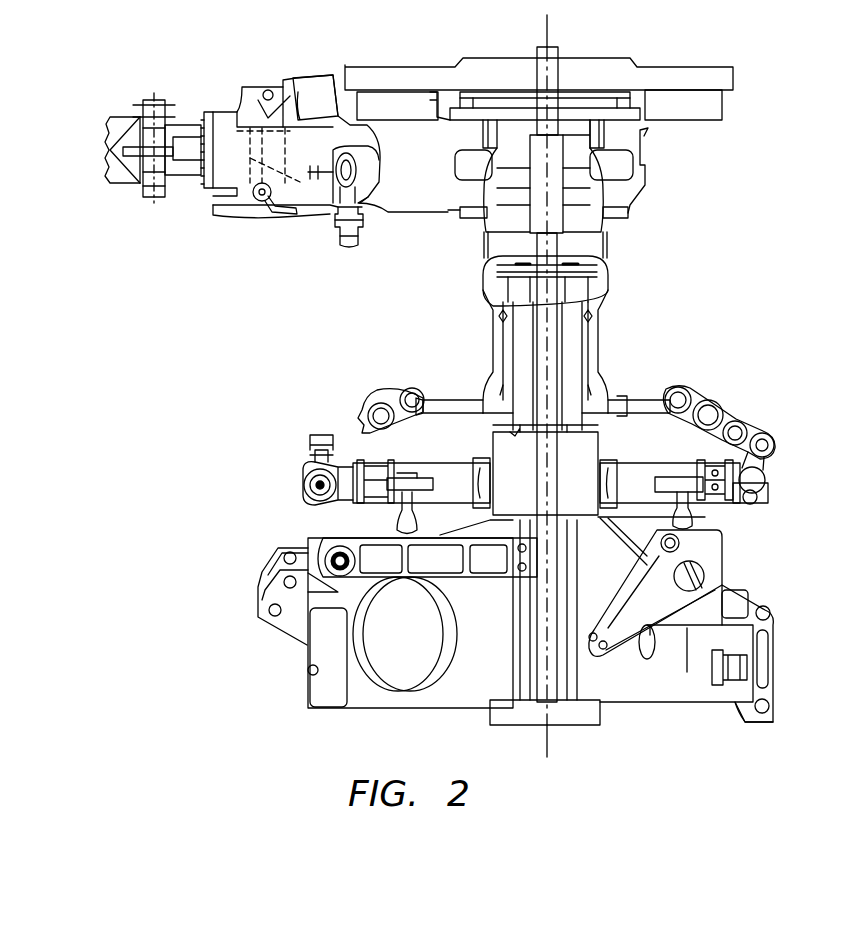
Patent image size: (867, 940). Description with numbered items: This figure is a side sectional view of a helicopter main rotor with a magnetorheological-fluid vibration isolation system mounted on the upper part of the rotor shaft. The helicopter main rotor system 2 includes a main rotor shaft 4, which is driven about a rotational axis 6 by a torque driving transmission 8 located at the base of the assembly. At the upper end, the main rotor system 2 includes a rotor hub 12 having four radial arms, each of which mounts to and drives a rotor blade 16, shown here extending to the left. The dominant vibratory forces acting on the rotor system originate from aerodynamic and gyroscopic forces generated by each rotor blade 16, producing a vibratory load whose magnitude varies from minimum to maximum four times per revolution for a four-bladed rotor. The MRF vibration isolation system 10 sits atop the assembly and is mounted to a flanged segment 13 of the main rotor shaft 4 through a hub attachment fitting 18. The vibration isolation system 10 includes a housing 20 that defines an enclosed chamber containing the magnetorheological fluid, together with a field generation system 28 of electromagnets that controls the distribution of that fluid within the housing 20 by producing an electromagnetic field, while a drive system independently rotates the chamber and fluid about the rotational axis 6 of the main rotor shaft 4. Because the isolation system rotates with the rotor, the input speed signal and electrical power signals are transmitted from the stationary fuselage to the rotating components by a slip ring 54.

The helicopter main rotor system 2 is at (55, 85).
The main rotor shaft 4 is at (540, 244).
The rotational axis 6 is at (548, 230).
The torque driving transmission 8 is at (488, 610).
The MRF vibration isolation system 10 is at (755, 55).
The rotor hub 12 is at (405, 163).
The flanged segment 13 is at (482, 116).
The rotor blade 16 is at (86, 190).
The hub attachment fitting 18 is at (562, 110).
The housing 20 is at (676, 67).
The field generation system 28 is at (711, 132).
The slip ring 54 is at (560, 182).